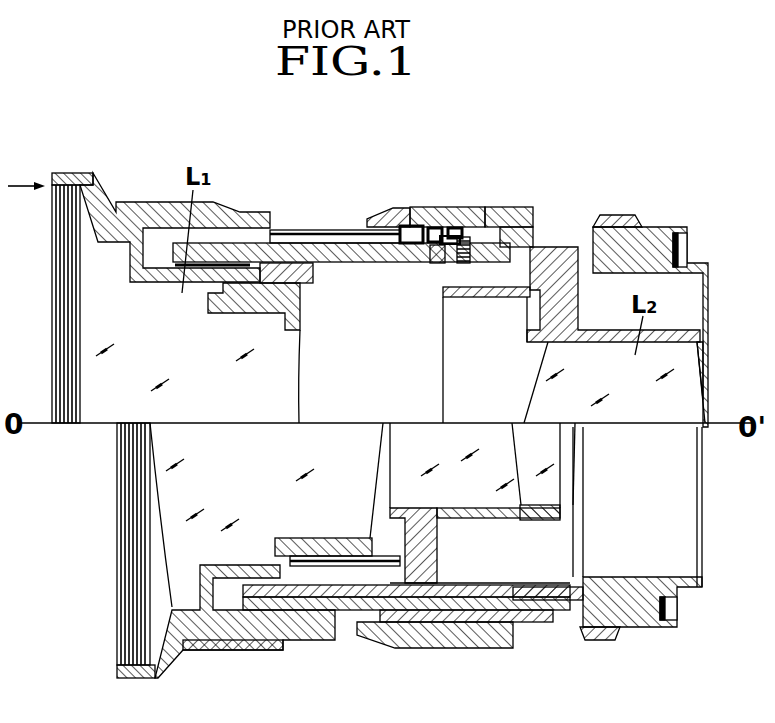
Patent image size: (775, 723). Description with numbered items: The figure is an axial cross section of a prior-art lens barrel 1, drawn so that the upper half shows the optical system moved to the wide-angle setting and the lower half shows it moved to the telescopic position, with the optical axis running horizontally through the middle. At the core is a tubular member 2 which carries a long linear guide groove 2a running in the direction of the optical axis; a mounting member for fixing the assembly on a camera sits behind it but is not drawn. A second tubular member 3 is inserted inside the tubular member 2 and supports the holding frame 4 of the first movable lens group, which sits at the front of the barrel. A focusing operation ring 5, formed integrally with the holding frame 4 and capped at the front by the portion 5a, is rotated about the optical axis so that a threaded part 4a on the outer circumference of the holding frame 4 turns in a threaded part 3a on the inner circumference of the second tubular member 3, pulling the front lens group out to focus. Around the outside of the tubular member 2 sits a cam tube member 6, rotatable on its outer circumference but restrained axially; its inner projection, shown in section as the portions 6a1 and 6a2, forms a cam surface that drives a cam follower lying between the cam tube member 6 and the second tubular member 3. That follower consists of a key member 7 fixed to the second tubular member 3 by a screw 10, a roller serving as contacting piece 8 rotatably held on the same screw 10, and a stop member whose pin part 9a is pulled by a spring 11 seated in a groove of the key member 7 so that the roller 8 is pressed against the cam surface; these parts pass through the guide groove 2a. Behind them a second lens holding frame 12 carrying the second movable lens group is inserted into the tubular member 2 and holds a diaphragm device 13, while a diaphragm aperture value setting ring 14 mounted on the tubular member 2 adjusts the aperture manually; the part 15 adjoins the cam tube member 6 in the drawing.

The lens barrel 1 is at (333, 200).
The tubular member 2 is at (580, 230).
The guide groove 2a is at (513, 245).
The second tubular member 3 is at (221, 250).
The threaded part 3a is at (277, 236).
The holding frame 4 is at (292, 332).
The threaded part 4a is at (305, 281).
The focusing operation ring 5 is at (147, 213).
The front ring cap 5a is at (66, 180).
The cam tube member 6 is at (498, 218).
The ring engaging portion 6a1 is at (432, 227).
The ring engaging arm 6a2 is at (445, 227).
The key member 7 is at (407, 258).
The contacting piece 8 is at (457, 227).
The pin part 9a is at (406, 213).
The screw 10 is at (464, 264).
The spring 11 is at (437, 263).
The second lens holding frame 12 is at (554, 262).
The diaphragm device 13 is at (418, 487).
The diaphragm aperture value setting ring 14 is at (613, 217).
The helicoid portion 15 is at (493, 217).